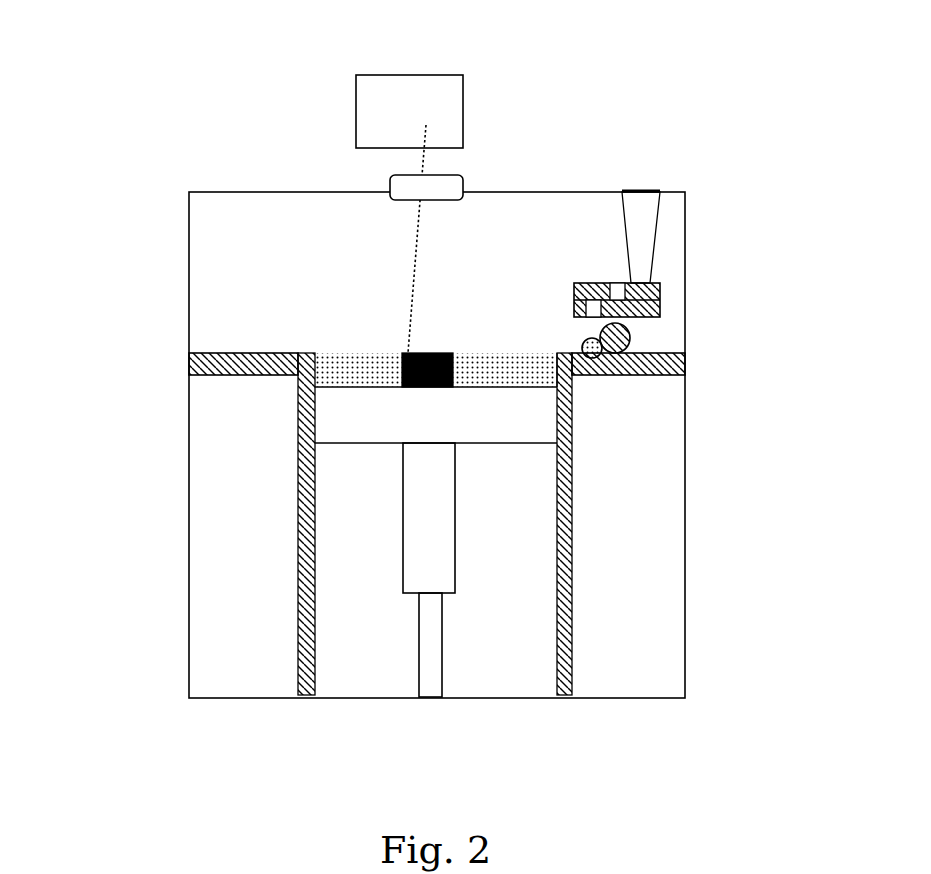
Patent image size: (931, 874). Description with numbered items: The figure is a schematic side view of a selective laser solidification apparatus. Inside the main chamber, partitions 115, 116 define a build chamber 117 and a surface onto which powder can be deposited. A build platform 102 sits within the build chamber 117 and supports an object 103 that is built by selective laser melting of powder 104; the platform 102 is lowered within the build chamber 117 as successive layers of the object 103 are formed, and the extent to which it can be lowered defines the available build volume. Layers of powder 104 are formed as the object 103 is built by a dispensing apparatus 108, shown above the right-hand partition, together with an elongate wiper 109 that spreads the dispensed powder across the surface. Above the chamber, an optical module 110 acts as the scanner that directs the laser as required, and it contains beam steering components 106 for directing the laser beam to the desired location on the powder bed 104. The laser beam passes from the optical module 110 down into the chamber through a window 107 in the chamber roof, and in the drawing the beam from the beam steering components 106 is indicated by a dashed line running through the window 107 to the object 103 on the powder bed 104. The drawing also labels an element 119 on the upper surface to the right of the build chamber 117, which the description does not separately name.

The build platform 102 is at (471, 412).
The object 103 is at (400, 388).
The powder 104 is at (381, 372).
The beam steering components 106 is at (427, 122).
The window 107 is at (398, 172).
The dispensing apparatus 108 is at (666, 296).
The elongate wiper 109 is at (634, 336).
The optical module 110 is at (346, 117).
The partition 115 is at (212, 350).
The partition 116 is at (578, 553).
The build chamber 117 is at (555, 381).
The right top plate 119 is at (596, 356).